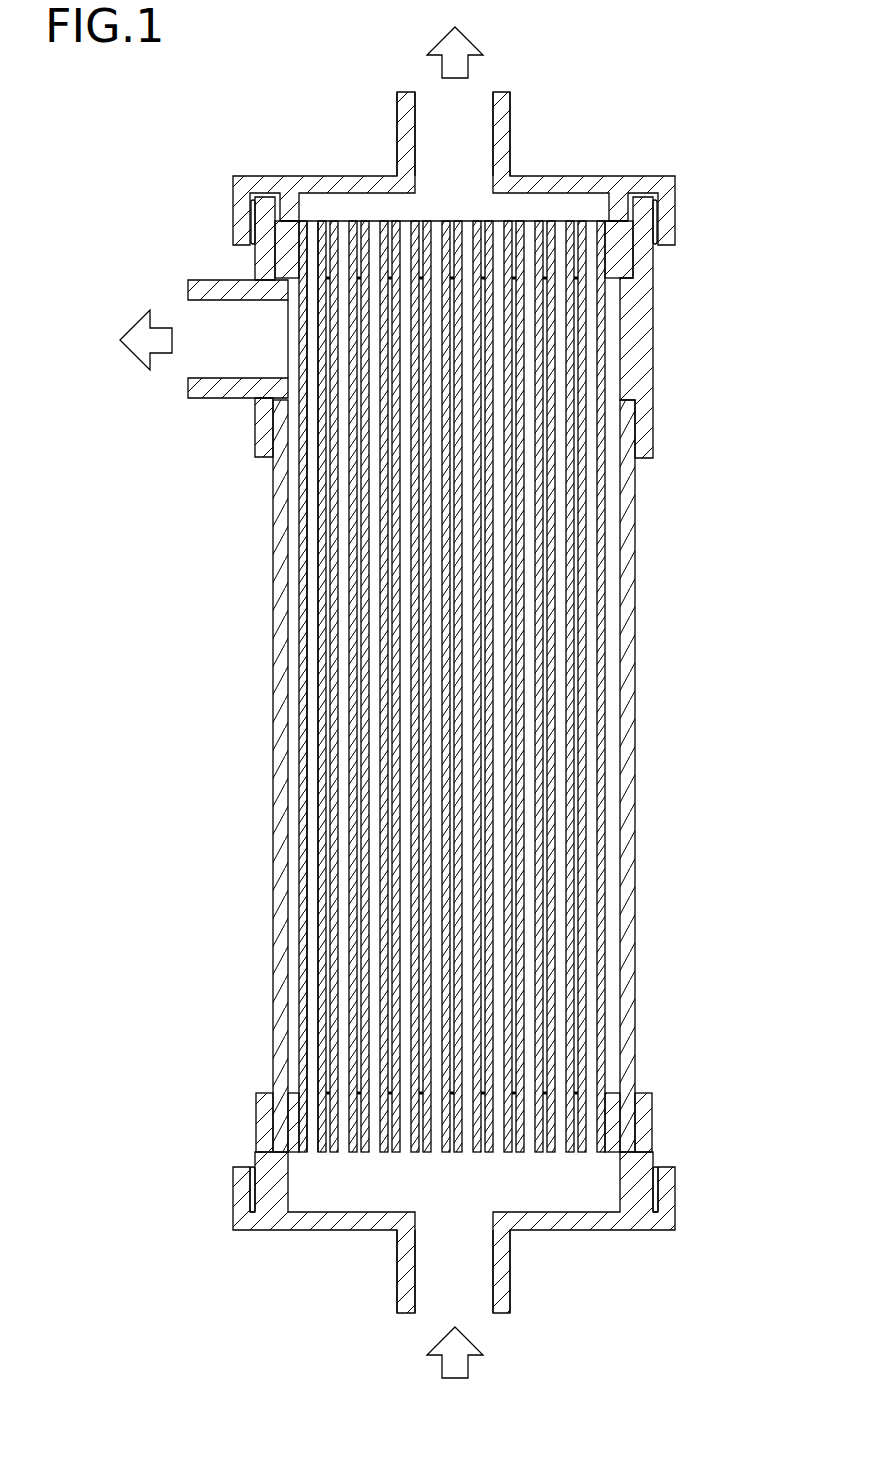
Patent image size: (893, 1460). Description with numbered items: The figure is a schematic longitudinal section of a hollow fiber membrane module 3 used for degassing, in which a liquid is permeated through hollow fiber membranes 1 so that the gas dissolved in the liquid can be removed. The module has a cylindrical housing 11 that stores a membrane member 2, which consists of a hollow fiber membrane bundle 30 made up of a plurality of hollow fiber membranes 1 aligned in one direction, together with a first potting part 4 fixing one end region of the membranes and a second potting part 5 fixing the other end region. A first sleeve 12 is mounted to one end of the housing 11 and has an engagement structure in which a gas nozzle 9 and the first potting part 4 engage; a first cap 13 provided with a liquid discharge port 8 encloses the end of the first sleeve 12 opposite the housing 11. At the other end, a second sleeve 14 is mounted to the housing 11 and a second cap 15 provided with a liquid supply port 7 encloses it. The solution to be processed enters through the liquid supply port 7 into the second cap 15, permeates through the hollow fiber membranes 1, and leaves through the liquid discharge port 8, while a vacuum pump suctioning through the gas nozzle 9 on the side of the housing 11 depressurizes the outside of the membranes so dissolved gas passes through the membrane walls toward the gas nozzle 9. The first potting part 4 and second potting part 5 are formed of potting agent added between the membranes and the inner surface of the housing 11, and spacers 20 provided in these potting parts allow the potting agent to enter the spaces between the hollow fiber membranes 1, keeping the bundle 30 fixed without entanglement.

The hollow fiber membrane 1 is at (600, 685).
The membrane member 2 is at (368, 205).
The hollow fiber membrane module 3 is at (688, 97).
The first potting part 4 is at (279, 253).
The second potting part 5 is at (284, 1113).
The liquid supply port 7 is at (505, 1252).
The liquid discharge port 8 is at (505, 140).
The gas nozzle 9 is at (237, 388).
The housing 11 is at (630, 798).
The first sleeve 12 is at (649, 362).
The first cap 13 is at (583, 176).
The second sleeve 14 is at (643, 1105).
The second cap 15 is at (600, 1233).
The spacer 20 is at (635, 265).
The hollow fiber membrane bundle 30 is at (605, 602).